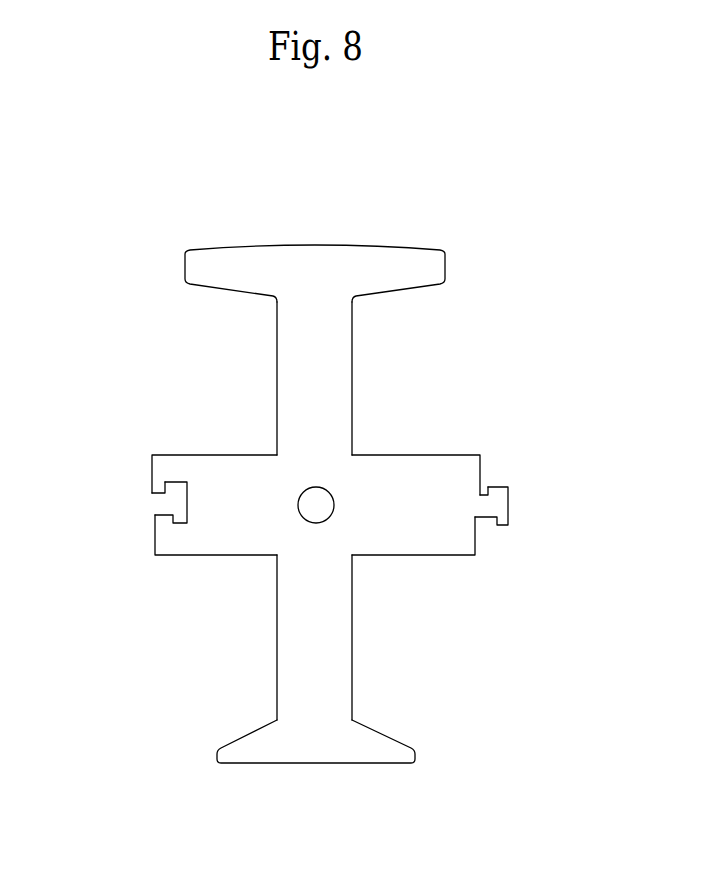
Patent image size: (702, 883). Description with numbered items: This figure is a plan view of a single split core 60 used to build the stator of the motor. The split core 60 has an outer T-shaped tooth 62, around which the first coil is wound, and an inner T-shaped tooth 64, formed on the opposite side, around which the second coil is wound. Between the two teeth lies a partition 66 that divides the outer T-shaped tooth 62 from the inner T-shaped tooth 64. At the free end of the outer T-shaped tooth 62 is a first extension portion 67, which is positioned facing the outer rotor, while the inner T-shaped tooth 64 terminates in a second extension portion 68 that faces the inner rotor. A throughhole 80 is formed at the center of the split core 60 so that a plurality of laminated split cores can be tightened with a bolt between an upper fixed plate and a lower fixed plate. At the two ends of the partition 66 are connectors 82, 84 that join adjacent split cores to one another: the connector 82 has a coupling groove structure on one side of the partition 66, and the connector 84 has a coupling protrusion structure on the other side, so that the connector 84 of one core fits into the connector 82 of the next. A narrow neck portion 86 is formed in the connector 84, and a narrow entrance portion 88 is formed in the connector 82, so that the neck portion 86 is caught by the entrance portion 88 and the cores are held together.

The split core 60 is at (432, 239).
The first extension portion 67 is at (228, 264).
The outer T-shaped tooth 62 is at (342, 367).
The partition 66 is at (412, 462).
The entrance portion 88 is at (163, 515).
The connector 82 is at (178, 520).
The neck portion 86 is at (481, 492).
The connector 84 is at (497, 527).
The throughhole 80 is at (315, 503).
The inner T-shaped tooth 64 is at (340, 635).
The second extension portion 68 is at (368, 752).